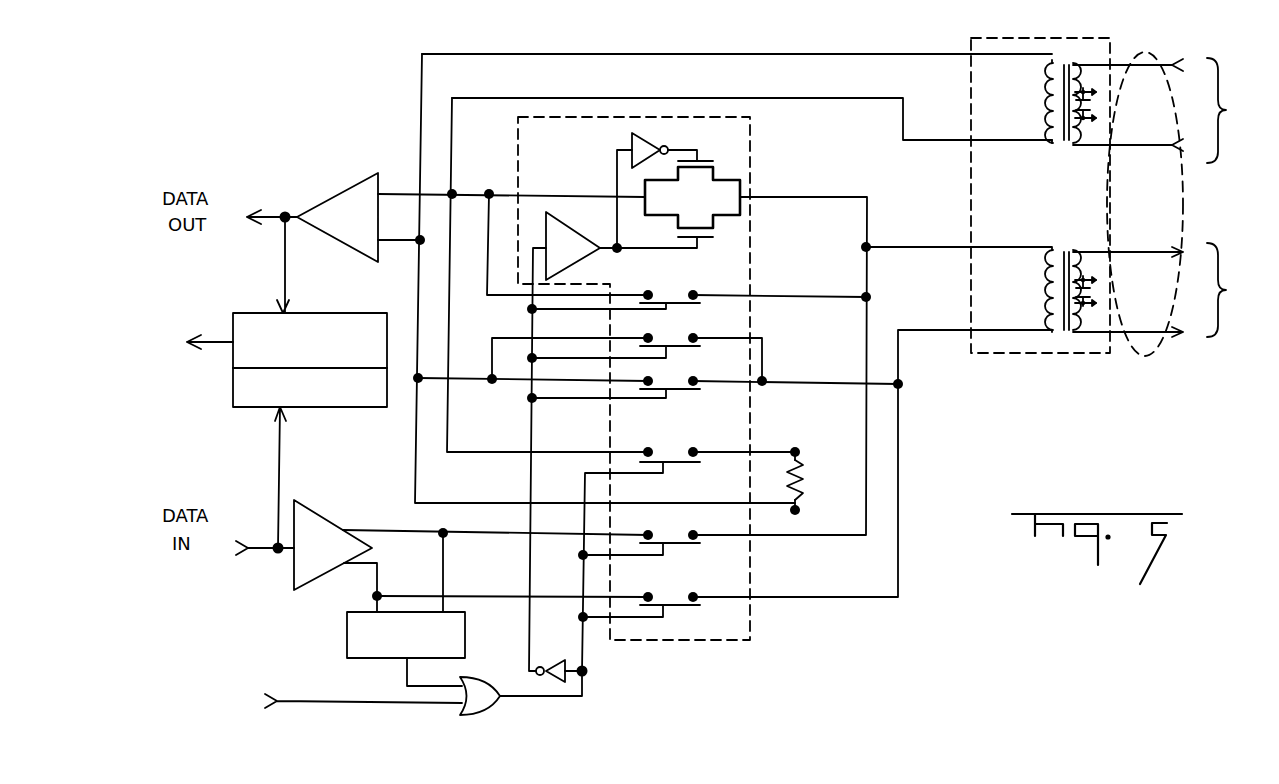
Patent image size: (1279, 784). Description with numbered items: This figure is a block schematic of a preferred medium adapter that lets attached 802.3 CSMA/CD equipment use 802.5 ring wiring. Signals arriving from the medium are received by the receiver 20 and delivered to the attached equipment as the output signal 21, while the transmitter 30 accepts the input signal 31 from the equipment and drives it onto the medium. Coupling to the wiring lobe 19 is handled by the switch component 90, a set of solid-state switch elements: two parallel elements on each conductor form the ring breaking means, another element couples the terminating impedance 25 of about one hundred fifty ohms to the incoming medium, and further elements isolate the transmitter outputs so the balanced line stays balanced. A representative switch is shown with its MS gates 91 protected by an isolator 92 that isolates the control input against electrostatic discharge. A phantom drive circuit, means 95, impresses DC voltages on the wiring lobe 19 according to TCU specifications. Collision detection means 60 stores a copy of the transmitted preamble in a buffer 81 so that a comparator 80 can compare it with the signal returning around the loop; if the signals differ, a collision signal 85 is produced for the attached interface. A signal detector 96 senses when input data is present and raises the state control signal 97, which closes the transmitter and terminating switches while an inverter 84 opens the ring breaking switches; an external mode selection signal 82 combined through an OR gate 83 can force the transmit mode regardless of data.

The receiver 20 is at (357, 185).
The output signal 21 is at (286, 212).
The collision signal 85 is at (220, 341).
The comparator 80 is at (330, 315).
The buffer 81 is at (347, 407).
The means for detecting collisions 60 is at (287, 365).
The input signal 31 is at (260, 543).
The transmitter 30 is at (330, 522).
The signal detector 96 is at (347, 622).
The mode selection signal 82 is at (309, 700).
The OR gate 83 is at (488, 707).
The inverter 84 is at (556, 690).
The state control signal 97 is at (588, 682).
The switch component 90 is at (514, 114).
The isolator 92 is at (564, 210).
The MS gates 91 is at (735, 187).
The terminating impedance 25 is at (802, 478).
The means for impressing DC voltages 95 is at (1012, 355).
The wiring lobe 19 is at (1143, 360).